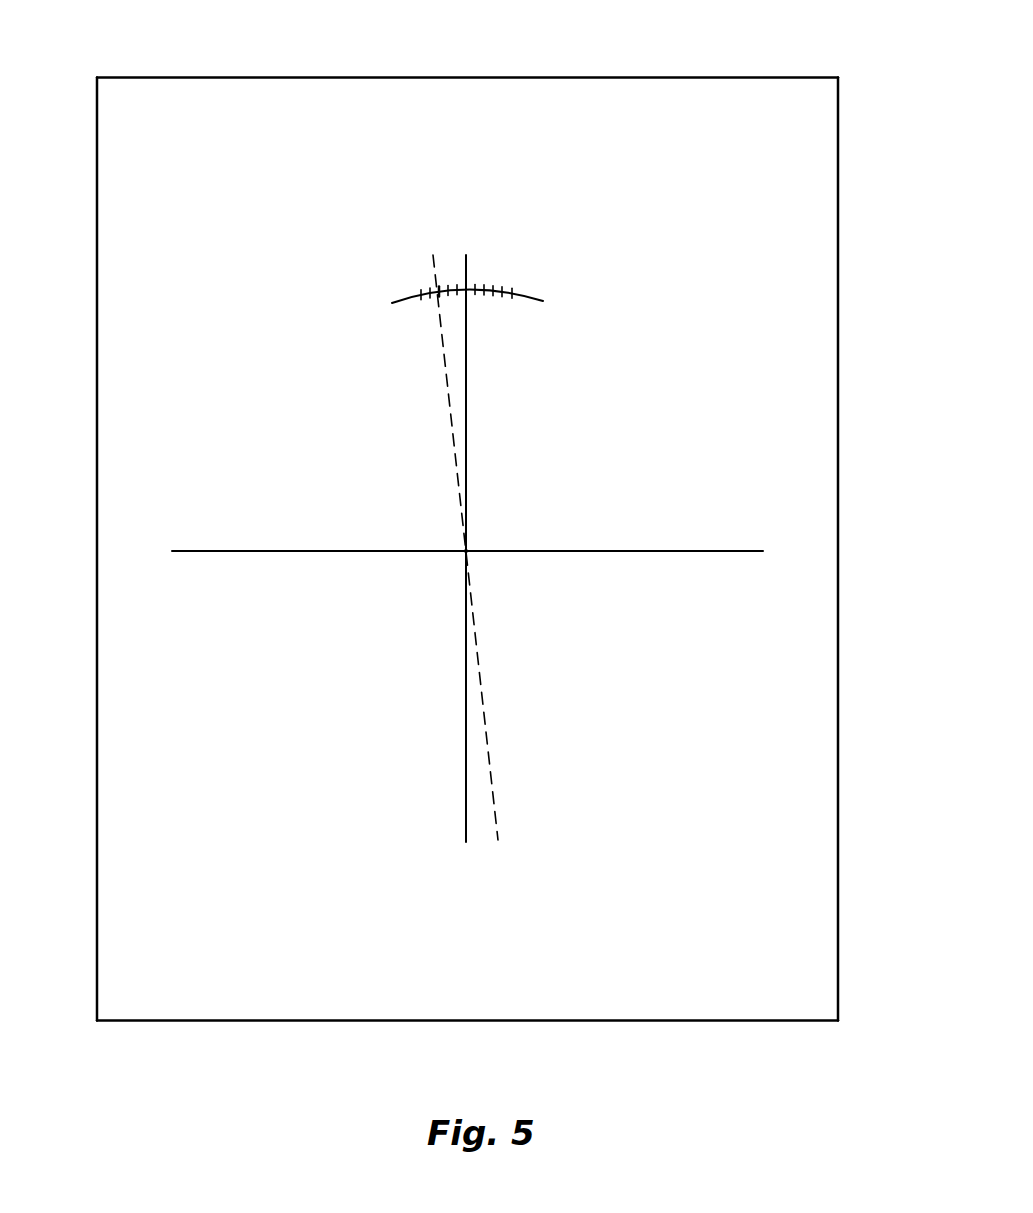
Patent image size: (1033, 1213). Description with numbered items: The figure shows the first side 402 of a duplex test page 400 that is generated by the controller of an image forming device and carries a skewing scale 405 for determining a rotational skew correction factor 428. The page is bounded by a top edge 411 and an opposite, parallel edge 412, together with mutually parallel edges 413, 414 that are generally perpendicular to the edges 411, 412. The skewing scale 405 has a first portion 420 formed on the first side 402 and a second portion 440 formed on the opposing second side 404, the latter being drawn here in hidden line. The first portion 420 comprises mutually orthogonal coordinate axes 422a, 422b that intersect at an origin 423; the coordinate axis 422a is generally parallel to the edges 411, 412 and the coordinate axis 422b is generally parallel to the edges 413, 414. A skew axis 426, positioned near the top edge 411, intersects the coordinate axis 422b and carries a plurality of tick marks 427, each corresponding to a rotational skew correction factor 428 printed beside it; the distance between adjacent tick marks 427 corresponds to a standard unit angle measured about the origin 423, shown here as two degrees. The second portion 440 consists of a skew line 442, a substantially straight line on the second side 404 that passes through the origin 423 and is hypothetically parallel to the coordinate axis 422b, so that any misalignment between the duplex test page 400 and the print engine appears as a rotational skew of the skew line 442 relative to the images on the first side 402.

The duplex test page 400 is at (464, 549).
The first side 402 is at (782, 1003).
The second side 404 is at (642, 1020).
The skewing scale 405 is at (245, 193).
The top edge 411 is at (427, 77).
The edge 412 is at (302, 1023).
The edge 413 is at (96, 490).
The edge 414 is at (838, 393).
The first portion 420 is at (667, 345).
The coordinate axis 422a is at (635, 550).
The coordinate axis 422b is at (465, 702).
The origin 423 is at (468, 556).
The skew axis 426 is at (532, 295).
The tick marks 427 is at (436, 304).
The rotational skew correction factor 428 is at (513, 268).
The second portion 440 is at (510, 730).
The skew line 442 is at (492, 790).